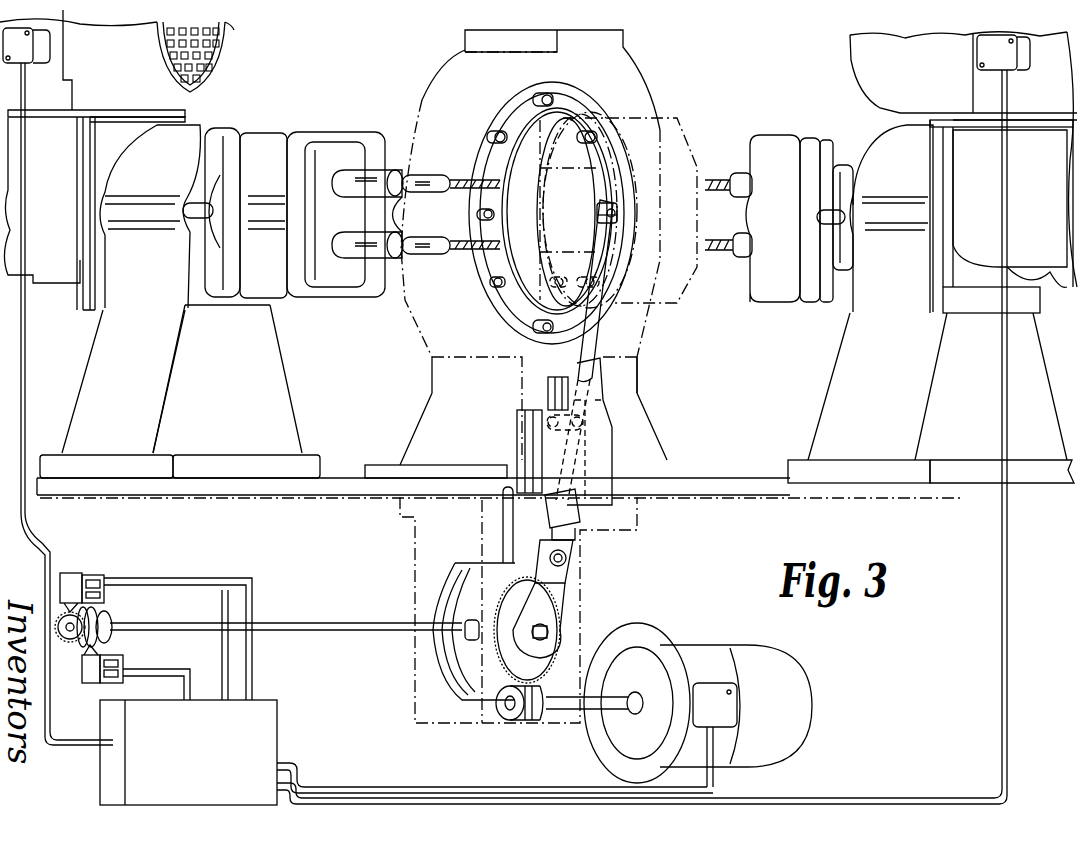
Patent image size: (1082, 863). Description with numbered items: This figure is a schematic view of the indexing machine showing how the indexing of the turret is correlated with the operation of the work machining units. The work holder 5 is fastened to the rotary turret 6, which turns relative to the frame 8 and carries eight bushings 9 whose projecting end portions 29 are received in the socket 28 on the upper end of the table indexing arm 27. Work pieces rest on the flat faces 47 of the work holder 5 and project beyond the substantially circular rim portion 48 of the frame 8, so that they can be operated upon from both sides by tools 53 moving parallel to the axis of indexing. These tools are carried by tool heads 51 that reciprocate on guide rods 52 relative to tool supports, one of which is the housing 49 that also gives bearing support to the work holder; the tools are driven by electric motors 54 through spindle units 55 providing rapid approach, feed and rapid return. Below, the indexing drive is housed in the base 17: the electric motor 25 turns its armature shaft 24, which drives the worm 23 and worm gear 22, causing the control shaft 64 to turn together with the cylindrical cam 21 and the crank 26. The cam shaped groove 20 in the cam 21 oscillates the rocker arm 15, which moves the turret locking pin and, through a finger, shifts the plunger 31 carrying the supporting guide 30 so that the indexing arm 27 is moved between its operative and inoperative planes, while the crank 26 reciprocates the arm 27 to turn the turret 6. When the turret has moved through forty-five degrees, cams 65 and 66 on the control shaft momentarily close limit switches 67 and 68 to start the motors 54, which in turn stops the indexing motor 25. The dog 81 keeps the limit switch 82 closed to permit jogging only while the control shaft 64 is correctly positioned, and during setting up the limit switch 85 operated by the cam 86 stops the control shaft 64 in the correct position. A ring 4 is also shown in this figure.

The ring frame 4 is at (540, 147).
The work holder 5 is at (675, 290).
The turret 6 is at (540, 338).
The frame 8 is at (640, 388).
The bushings 9 is at (504, 286).
The rocker arm 15 is at (508, 545).
The base 17 is at (736, 490).
The cam shaped groove 20 is at (470, 640).
The cylindrical cam 21 is at (452, 680).
The worm gear 22 is at (540, 665).
The worm 23 is at (522, 720).
The shaft 24 is at (612, 705).
The electric motor 25 is at (765, 752).
The crank 26 is at (562, 592).
The table indexing arm 27 is at (594, 352).
The socket 28 is at (620, 212).
The projecting end portions 29 is at (490, 283).
The supporting guide 30 is at (607, 450).
The plunger 31 is at (585, 425).
The flat faces 47 is at (680, 130).
The rim portion 48 is at (634, 76).
The housing 49 is at (278, 397).
The tool heads 51 is at (342, 290).
The guide rods 52 is at (187, 235).
The drills 53 is at (470, 250).
The electric motors 54 is at (183, 93).
The spindle units 55 is at (60, 285).
The control shaft 64 is at (388, 632).
The cam 65 is at (112, 618).
The cam 66 is at (97, 610).
The limit switch 67 is at (104, 683).
The limit switch 68 is at (84, 683).
The dog 81 is at (70, 642).
The limit switch 82 is at (68, 573).
The limit switch 85 is at (82, 578).
The cam 86 is at (82, 668).